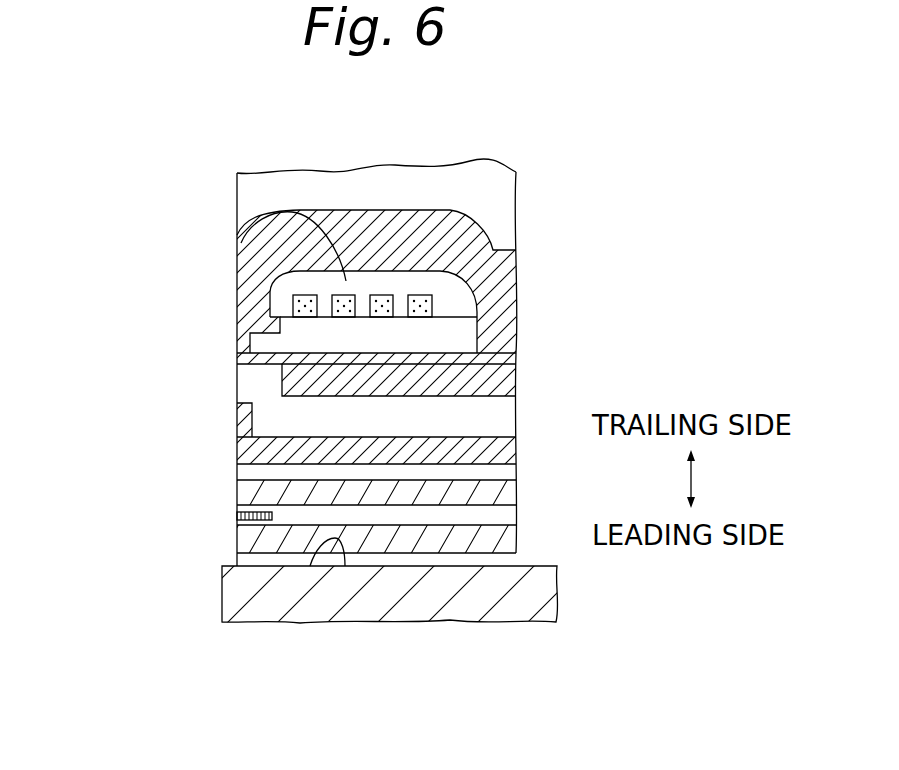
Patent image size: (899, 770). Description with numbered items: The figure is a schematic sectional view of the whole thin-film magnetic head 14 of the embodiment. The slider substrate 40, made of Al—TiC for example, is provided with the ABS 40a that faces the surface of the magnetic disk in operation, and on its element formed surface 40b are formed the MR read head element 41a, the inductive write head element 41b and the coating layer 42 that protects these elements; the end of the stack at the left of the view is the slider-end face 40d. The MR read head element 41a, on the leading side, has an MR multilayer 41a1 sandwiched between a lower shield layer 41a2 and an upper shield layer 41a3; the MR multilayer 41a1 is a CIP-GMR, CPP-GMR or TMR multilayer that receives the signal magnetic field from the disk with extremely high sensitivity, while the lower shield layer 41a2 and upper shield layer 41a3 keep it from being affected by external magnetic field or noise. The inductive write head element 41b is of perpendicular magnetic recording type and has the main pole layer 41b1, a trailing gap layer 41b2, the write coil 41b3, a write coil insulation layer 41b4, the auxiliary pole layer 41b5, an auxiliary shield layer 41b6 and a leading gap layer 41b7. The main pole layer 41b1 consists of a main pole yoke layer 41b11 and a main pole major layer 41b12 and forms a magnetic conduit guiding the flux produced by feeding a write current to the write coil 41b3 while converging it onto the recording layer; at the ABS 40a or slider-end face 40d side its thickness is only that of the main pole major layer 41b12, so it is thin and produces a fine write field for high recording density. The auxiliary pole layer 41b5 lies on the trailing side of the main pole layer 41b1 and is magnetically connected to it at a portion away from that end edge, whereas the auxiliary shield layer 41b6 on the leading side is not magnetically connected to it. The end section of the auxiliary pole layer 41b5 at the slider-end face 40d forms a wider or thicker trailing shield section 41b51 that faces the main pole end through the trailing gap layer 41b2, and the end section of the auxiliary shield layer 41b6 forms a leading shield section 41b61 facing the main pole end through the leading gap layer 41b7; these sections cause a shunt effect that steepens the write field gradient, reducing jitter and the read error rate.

The thin-film magnetic head 14 is at (508, 145).
The coating layer 42 is at (372, 180).
The slider substrate 40 is at (537, 590).
The ABS 40a is at (222, 578).
The element formed surface 40b is at (345, 566).
The slider-end face 40d is at (237, 193).
The inductive write head element 41b is at (68, 453).
The write coil insulation layer 41b4 is at (262, 211).
The write coil 41b3 is at (275, 239).
The auxiliary pole layer 41b5 is at (275, 265).
The trailing shield section 41b51 is at (255, 310).
The trailing gap layer 41b2 is at (278, 347).
The main pole layer 41b1 is at (138, 333).
The main pole major layer 41b12 is at (240, 357).
The main pole yoke layer 41b11 is at (298, 382).
The leading gap layer 41b7 is at (245, 386).
The leading shield section 41b61 is at (245, 418).
The auxiliary shield layer 41b6 is at (260, 455).
The MR read head element 41a is at (135, 475).
The upper shield layer 41a3 is at (245, 487).
The MR multilayer 41a1 is at (240, 513).
The lower shield layer 41a2 is at (240, 540).